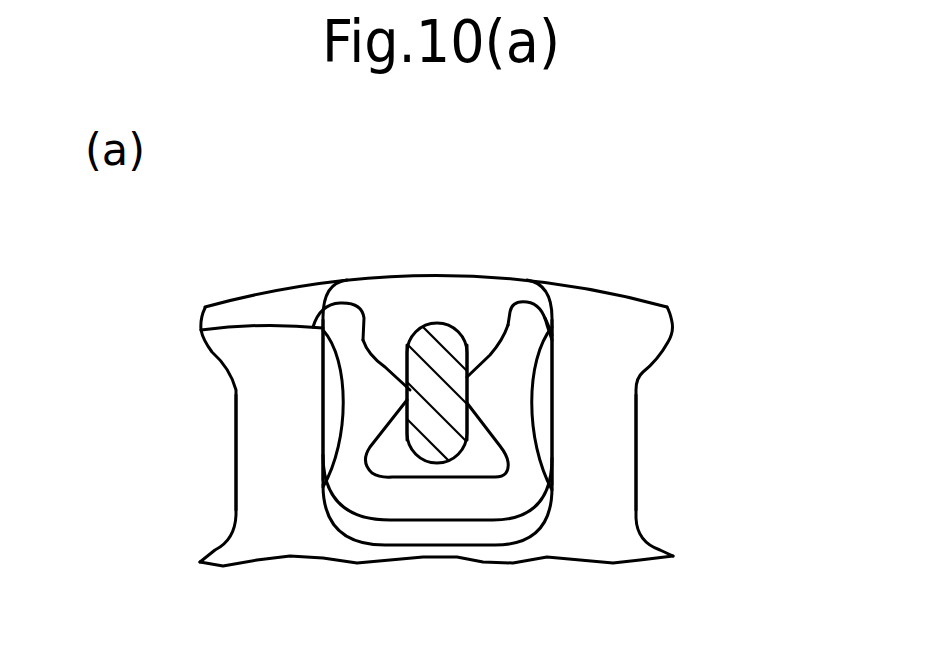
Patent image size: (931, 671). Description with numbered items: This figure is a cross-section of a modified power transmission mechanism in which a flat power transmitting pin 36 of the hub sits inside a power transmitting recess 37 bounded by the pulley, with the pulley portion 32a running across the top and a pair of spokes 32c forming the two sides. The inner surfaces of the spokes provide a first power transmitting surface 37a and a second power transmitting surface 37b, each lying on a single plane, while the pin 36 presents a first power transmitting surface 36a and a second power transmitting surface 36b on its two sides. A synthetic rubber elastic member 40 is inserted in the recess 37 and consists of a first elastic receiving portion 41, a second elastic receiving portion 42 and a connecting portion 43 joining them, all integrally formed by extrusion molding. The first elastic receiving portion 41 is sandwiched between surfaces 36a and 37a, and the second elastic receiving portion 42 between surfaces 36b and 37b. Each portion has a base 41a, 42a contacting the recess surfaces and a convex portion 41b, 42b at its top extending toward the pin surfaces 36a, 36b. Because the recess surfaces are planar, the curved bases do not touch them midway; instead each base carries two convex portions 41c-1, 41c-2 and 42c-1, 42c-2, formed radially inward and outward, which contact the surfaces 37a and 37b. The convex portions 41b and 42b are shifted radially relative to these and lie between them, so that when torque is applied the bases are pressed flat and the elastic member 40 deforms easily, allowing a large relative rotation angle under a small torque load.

The pulley portion 32a is at (630, 293).
The spoke 32c is at (247, 438).
The power transmitting pin 36 is at (420, 359).
The first power transmitting surface 36a is at (410, 347).
The second power transmitting surface 36b is at (467, 330).
The power transmitting recess 37 is at (435, 527).
The first power transmitting surface 37a is at (323, 487).
The second power transmitting surface 37b is at (552, 490).
The elastic member 40 is at (435, 449).
The first elastic receiving portion 41 is at (347, 400).
The base 41a is at (323, 317).
The convex portion 41b is at (393, 387).
The convex portion 41c-1 is at (201, 330).
The convex portion 41c-2 is at (340, 462).
The second elastic receiving portion 42 is at (513, 403).
The base 42a is at (512, 302).
The convex portion 42b is at (480, 387).
The convex portion 42c-1 is at (552, 318).
The convex portion 42c-2 is at (547, 463).
The connecting portion 43 is at (387, 500).